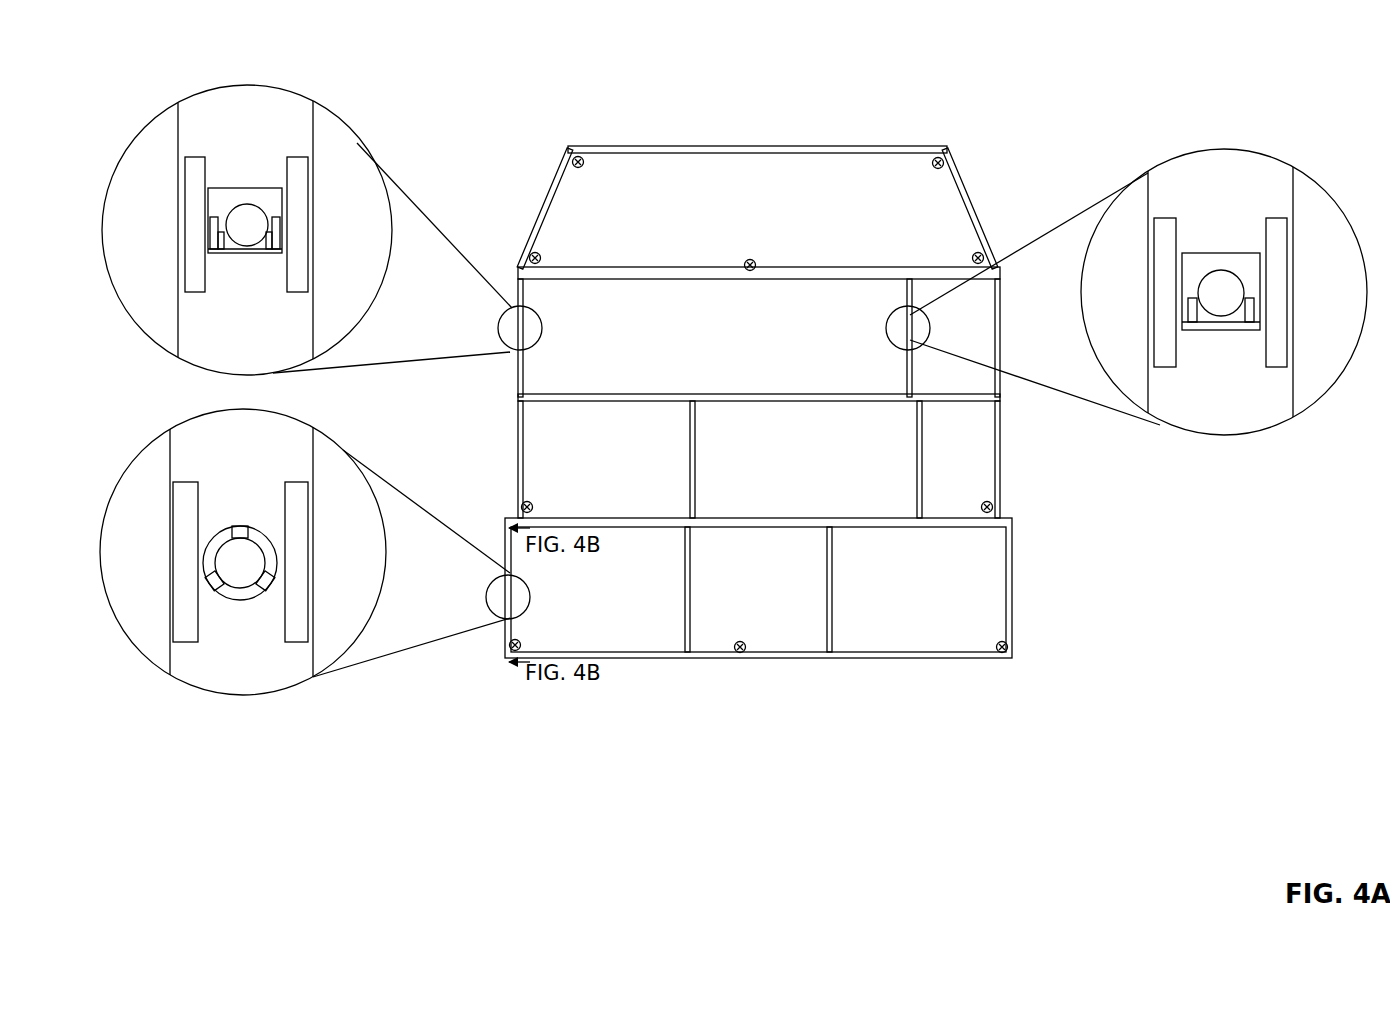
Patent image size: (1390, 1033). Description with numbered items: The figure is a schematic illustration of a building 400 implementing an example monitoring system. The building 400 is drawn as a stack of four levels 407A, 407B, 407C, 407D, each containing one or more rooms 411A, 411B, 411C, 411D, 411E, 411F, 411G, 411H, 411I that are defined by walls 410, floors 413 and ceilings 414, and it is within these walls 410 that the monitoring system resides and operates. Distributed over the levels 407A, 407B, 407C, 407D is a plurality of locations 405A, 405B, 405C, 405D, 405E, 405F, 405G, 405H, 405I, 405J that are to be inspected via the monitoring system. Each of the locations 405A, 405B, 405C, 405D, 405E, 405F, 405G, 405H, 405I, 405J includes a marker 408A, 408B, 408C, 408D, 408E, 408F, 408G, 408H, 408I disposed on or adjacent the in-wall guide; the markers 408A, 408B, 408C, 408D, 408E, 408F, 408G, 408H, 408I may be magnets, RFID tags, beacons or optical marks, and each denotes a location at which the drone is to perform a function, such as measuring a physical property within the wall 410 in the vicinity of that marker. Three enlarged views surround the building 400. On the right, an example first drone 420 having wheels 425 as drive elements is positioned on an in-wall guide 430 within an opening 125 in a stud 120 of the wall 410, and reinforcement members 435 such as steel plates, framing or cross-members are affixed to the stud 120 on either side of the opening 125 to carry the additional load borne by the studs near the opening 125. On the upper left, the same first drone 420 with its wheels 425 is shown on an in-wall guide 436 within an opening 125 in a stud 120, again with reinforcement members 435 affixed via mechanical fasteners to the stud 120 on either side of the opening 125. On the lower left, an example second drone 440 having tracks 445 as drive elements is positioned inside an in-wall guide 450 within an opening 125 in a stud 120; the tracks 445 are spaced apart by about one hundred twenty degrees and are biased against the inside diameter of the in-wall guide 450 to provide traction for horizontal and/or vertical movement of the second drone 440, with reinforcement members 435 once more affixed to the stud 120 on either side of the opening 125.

The stud 120 is at (272, 98).
The opening 125 is at (218, 188).
The building 400 is at (924, 120).
The location 405A is at (520, 646).
The location 405B is at (748, 652).
The location 405C is at (1008, 652).
The location 405D is at (992, 511).
The location 405E is at (523, 503).
The location 405F is at (542, 257).
The location 405G is at (750, 260).
The location 405H is at (982, 254).
The location 405I is at (945, 160).
The location 405J is at (571, 158).
The level 407A is at (1012, 588).
The level 407B is at (1000, 438).
The level 407C is at (1000, 348).
The level 407D is at (546, 194).
The marker 408A is at (508, 650).
The marker 408B is at (737, 654).
The marker 408C is at (1008, 645).
The marker 408D is at (993, 505).
The marker 408E is at (533, 504).
The marker 408F is at (583, 156).
The marker 408G is at (757, 262).
The marker 408H is at (986, 262).
The marker 408I is at (951, 156).
The wall 410 is at (968, 200).
The room 411A is at (655, 633).
The room 411B is at (758, 612).
The room 411C is at (923, 625).
The room 411D is at (608, 498).
The room 411E is at (816, 497).
The room 411F is at (955, 422).
The room 411G is at (955, 382).
The room 411H is at (735, 375).
The room 411I is at (912, 249).
The floor 413 is at (547, 510).
The ceiling 414 is at (733, 528).
The first drone 420 is at (237, 222).
The wheels 425 is at (210, 250).
The in-wall guide 430 is at (1210, 325).
The reinforcement members 435 is at (200, 292).
The in-wall guide 436 is at (258, 255).
The second drone 440 is at (235, 568).
The tracks 445 is at (240, 526).
The in-wall guide 450 is at (232, 601).